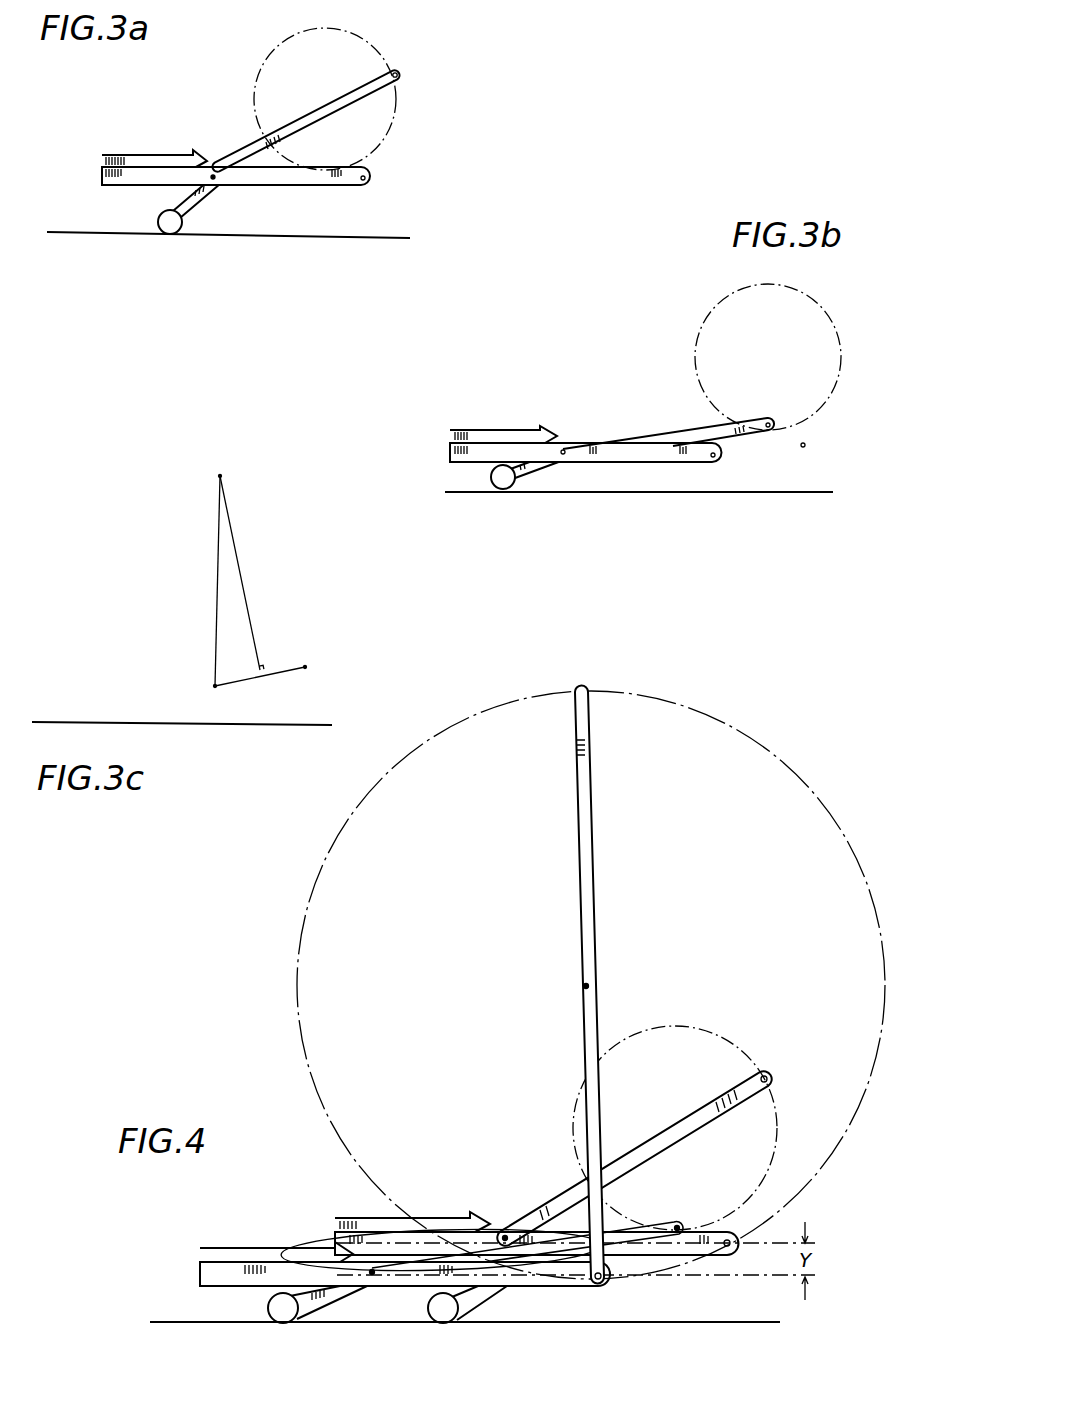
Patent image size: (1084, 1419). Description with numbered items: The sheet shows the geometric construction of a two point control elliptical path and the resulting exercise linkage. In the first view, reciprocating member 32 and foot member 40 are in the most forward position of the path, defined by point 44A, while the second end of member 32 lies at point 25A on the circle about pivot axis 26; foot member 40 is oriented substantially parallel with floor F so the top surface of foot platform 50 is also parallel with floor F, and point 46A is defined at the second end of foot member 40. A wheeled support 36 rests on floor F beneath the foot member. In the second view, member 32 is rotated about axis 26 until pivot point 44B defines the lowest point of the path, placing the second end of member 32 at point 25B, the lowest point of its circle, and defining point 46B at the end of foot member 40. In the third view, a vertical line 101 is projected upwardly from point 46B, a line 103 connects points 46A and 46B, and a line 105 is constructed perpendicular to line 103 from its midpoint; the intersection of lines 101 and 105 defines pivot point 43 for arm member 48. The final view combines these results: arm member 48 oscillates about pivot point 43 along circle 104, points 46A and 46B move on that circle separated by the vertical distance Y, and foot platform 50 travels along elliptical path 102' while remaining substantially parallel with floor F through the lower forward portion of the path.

In FIG. 3a, the point 25A is at (400, 73).
In FIG. 4, the point 25A is at (765, 1075).
In FIG. 3b, the point 25B is at (773, 422).
In FIG. 4, the point 25B is at (677, 1227).
In FIG. 3a, the pivot axis 26 is at (330, 99).
In FIG. 3b, the pivot axis 26 is at (768, 353).
In FIG. 3a, the reciprocating member 32 is at (247, 150).
In FIG. 3b, the reciprocating member 32 is at (668, 433).
In FIG. 3a, the wheel leg 36 is at (173, 228).
In FIG. 3b, the wheel leg 36 is at (525, 475).
In FIG. 4, the wheel leg 36 is at (387, 1304).
In FIG. 3a, the foot member 40 is at (315, 186).
In FIG. 3b, the foot member 40 is at (637, 463).
In FIG. 4, the foot member 40 is at (469, 1259).
In FIG. 3c, the pivot point 43 is at (218, 476).
In FIG. 4, the pivot point 43 is at (586, 986).
In FIG. 3a, the point 44A is at (217, 178).
In FIG. 4, the point 44A is at (505, 1236).
In FIG. 3b, the pivot point 44B is at (565, 449).
In FIG. 4, the pivot point 44B is at (372, 1270).
In FIG. 3a, the point 46A is at (373, 178).
In FIG. 3b, the point 46A is at (805, 446).
In FIG. 3c, the point 46A is at (307, 667).
In FIG. 4, the point 46A is at (727, 1243).
In FIG. 3b, the point 46B is at (716, 458).
In FIG. 3c, the point 46B is at (215, 687).
In FIG. 4, the point 46B is at (602, 1278).
In FIG. 4, the arm member 48 is at (583, 820).
In FIG. 3a, the foot platform 50 is at (127, 163).
In FIG. 3b, the foot platform 50 is at (487, 433).
In FIG. 4, the foot platform 50 is at (412, 1222).
In FIG. 3c, the vertical line 101 is at (218, 568).
In FIG. 4, the elliptical path 102' is at (434, 1224).
In FIG. 3c, the line 103 is at (290, 667).
In FIG. 4, the circle 104 is at (728, 725).
In FIG. 3c, the line 105 is at (243, 585).
In FIG. 3a, the floor F is at (78, 232).
In FIG. 3b, the floor F is at (457, 490).
In FIG. 4, the floor F is at (177, 1320).